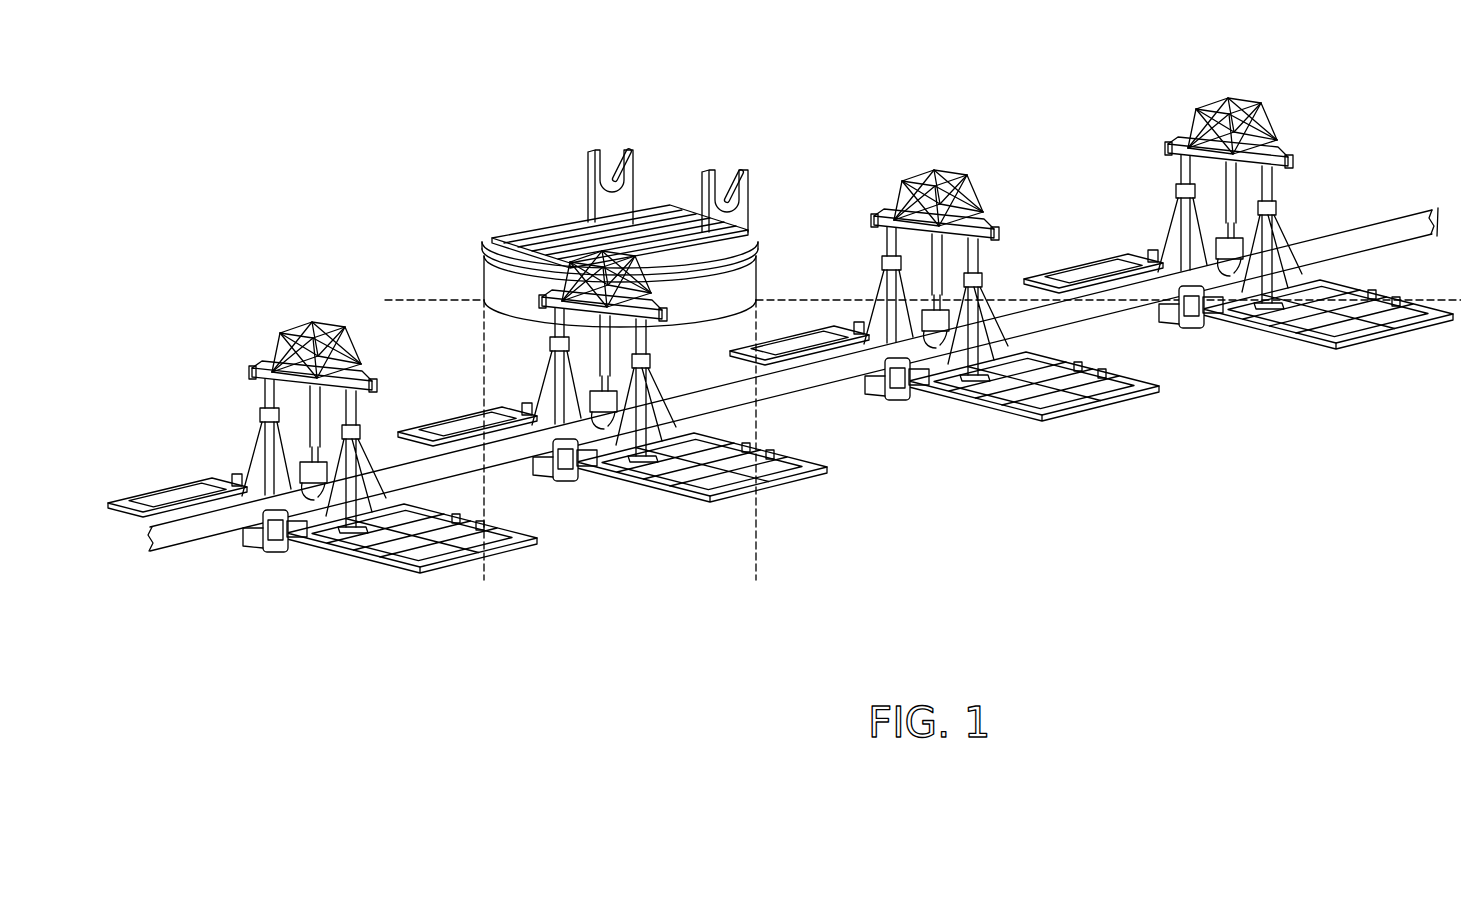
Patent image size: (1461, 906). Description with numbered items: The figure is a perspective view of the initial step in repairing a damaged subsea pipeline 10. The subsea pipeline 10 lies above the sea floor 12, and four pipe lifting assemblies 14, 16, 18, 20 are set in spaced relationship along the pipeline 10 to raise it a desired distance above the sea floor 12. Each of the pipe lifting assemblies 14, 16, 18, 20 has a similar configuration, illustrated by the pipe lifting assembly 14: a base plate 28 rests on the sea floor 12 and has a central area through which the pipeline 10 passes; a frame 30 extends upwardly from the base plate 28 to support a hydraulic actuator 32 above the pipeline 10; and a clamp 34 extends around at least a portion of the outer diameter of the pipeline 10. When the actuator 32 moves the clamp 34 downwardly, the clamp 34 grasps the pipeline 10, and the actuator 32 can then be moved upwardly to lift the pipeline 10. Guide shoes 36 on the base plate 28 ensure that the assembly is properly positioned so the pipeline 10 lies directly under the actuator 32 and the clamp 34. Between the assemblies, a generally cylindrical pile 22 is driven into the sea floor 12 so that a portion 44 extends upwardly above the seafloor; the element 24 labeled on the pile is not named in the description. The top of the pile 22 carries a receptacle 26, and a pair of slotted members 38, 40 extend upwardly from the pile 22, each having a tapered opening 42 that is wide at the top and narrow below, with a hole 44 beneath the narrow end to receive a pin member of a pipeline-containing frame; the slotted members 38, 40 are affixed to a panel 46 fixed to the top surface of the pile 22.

The subsea pipeline 10 is at (1114, 304).
The sea floor 12 is at (810, 300).
The pipe lifting assembly 14 is at (322, 470).
The pipe lifting assembly 16 is at (706, 497).
The pipe lifting assembly 18 is at (987, 246).
The pipe lifting assembly 20 is at (1278, 180).
The pile 22 is at (752, 528).
The buoy 24 is at (758, 262).
The receptacle 26 is at (651, 195).
The base plate 28 is at (460, 560).
The frame 30 is at (362, 440).
The hydraulic actuator 32 is at (322, 410).
The clamp 34 is at (308, 540).
The guide shoes 36 is at (272, 552).
The slotted member 38 is at (750, 197).
The slotted member 40 is at (588, 170).
The tapered opening 42 is at (728, 170).
The hole 44 is at (614, 182).
The panel 46 is at (534, 224).